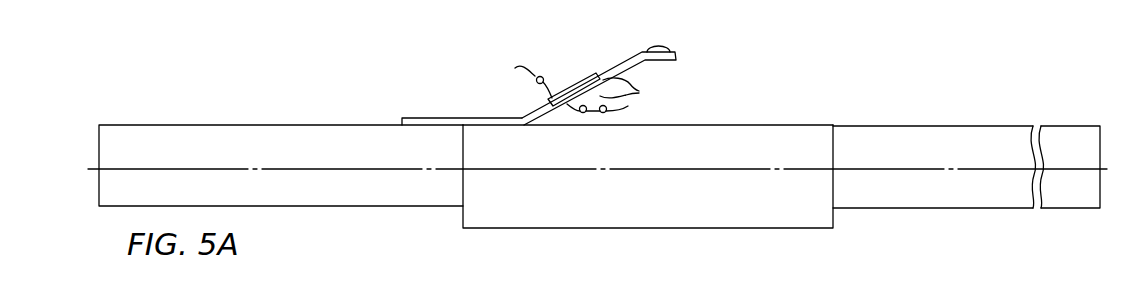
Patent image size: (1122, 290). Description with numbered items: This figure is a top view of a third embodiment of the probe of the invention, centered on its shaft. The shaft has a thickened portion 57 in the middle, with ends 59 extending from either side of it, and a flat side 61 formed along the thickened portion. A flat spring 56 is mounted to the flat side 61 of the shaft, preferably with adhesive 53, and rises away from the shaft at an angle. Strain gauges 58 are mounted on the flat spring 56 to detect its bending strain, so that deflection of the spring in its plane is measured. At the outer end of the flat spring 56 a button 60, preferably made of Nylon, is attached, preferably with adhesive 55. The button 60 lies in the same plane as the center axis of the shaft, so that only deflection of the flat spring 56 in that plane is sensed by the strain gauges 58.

The adhesive 53 is at (402, 120).
The adhesive 55 is at (643, 53).
The flat spring 56 is at (523, 116).
The thickened portion 57 is at (727, 229).
The strain gauges 58 is at (615, 95).
The ends 59 is at (387, 206).
The button 60 is at (668, 50).
The flat side 61 is at (758, 125).